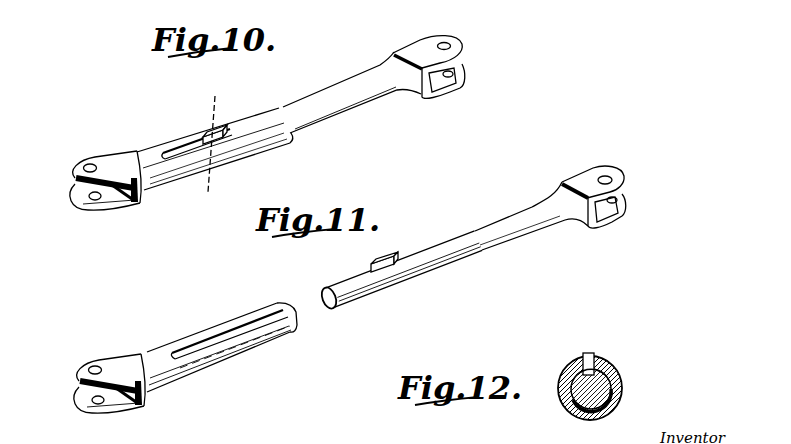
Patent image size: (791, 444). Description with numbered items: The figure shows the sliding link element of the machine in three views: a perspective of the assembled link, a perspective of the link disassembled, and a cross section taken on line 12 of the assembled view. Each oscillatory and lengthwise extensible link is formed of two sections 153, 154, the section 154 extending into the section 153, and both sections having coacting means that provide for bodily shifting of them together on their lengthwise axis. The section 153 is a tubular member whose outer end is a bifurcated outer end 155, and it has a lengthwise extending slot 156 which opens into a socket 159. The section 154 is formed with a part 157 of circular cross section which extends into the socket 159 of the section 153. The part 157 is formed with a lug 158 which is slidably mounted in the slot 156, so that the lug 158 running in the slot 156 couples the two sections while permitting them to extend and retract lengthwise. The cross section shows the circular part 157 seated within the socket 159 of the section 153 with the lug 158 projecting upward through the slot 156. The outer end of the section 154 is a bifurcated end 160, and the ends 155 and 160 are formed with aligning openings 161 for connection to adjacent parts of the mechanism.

In FIG. 10, the section line 12 is at (212, 149).
In FIG. 10, the section 153 is at (158, 186).
In FIG. 11, the section 153 is at (154, 349).
In FIG. 12, the section 153 is at (623, 395).
In FIG. 10, the section 154 is at (343, 90).
In FIG. 11, the section 154 is at (493, 221).
In FIG. 10, the bifurcated outer end 155 is at (116, 197).
In FIG. 11, the bifurcated outer end 155 is at (121, 400).
In FIG. 10, the slot 156 is at (182, 147).
In FIG. 11, the part of circular cross section 157 is at (432, 265).
In FIG. 12, the part of circular cross section 157 is at (565, 380).
In FIG. 10, the lug 158 is at (202, 131).
In FIG. 11, the lug 158 is at (386, 256).
In FIG. 12, the lug 158 is at (582, 353).
In FIG. 12, the socket 159 is at (617, 375).
In FIG. 11, the bifurcated end 160 is at (586, 176).
In FIG. 10, the pin holes 161 is at (89, 163).
In FIG. 11, the pin holes 161 is at (91, 399).